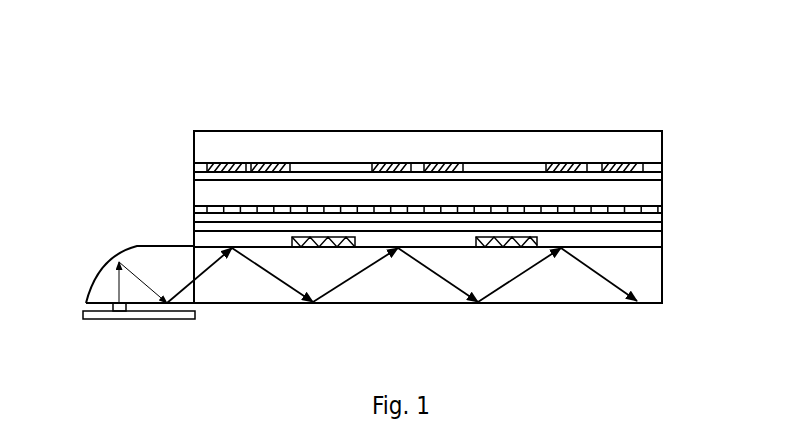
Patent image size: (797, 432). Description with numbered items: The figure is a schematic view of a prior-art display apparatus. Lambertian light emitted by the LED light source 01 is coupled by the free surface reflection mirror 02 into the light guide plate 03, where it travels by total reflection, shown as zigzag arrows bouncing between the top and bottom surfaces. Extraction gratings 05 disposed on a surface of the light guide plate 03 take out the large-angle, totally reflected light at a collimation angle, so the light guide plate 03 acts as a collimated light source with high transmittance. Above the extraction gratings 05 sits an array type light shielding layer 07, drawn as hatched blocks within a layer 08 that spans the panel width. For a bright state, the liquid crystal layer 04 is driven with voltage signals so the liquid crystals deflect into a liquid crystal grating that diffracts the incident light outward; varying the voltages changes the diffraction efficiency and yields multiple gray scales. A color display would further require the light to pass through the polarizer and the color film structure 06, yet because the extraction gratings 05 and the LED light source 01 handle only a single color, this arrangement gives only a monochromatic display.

The LED light source 01 is at (112, 320).
The free surface reflection mirror 02 is at (107, 267).
The light guide plate 03 is at (663, 273).
The liquid crystal layer 04 is at (663, 190).
The extraction grating 05 is at (520, 238).
The color film structure 06 is at (663, 165).
The array type light shielding layer 07 is at (440, 163).
The color conversion layer 08 is at (323, 163).